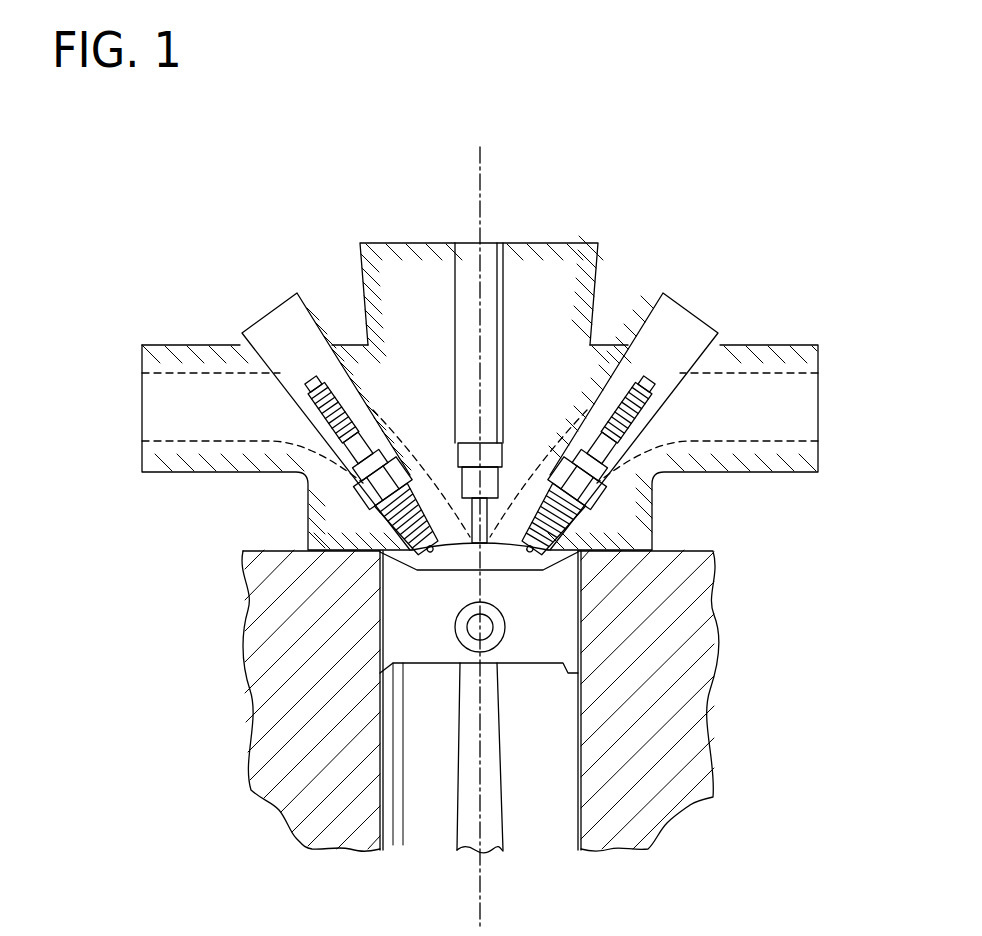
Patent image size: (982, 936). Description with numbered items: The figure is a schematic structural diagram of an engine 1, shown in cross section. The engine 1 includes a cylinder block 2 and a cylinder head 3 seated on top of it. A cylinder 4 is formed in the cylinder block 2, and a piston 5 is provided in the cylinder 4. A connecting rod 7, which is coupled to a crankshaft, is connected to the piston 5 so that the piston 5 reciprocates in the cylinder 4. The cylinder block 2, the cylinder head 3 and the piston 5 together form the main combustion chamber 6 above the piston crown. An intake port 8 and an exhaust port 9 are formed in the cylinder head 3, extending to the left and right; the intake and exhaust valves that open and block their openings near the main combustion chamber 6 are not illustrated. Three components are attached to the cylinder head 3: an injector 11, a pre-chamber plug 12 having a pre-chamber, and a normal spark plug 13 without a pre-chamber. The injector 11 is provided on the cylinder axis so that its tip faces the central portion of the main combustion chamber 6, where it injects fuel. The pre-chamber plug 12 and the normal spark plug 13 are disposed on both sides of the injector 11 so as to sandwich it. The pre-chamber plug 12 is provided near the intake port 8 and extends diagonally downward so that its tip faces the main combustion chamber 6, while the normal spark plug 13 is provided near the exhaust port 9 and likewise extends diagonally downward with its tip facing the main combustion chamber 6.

The engine 1 is at (408, 196).
The cylinder block 2 is at (263, 724).
The cylinder head 3 is at (198, 462).
The cylinder 4 is at (384, 846).
The piston 5 is at (418, 672).
The main combustion chamber 6 is at (452, 560).
The connecting rod 7 is at (458, 832).
The intake port 8 is at (203, 384).
The exhaust port 9 is at (754, 384).
The injector 11 is at (501, 234).
The pre-chamber plug 12 is at (304, 365).
The normal spark plug 13 is at (656, 360).